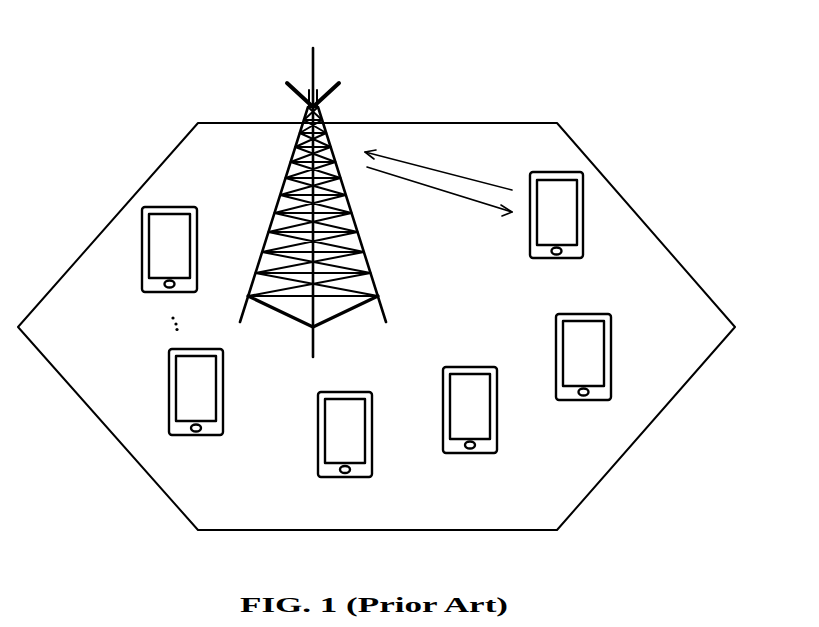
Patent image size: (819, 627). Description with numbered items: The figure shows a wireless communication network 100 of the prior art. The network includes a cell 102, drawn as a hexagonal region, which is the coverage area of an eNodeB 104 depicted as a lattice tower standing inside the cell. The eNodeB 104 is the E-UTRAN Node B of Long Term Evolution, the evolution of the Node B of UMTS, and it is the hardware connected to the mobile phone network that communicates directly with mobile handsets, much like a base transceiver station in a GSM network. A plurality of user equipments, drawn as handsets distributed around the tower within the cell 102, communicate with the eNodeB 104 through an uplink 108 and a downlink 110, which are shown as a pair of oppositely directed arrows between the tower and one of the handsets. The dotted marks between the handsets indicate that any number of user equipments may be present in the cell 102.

The wireless communication network 100 is at (615, 103).
The cell 102 is at (503, 123).
The eNodeB 104 is at (287, 188).
The uplink 108 is at (425, 165).
The downlink 110 is at (397, 172).